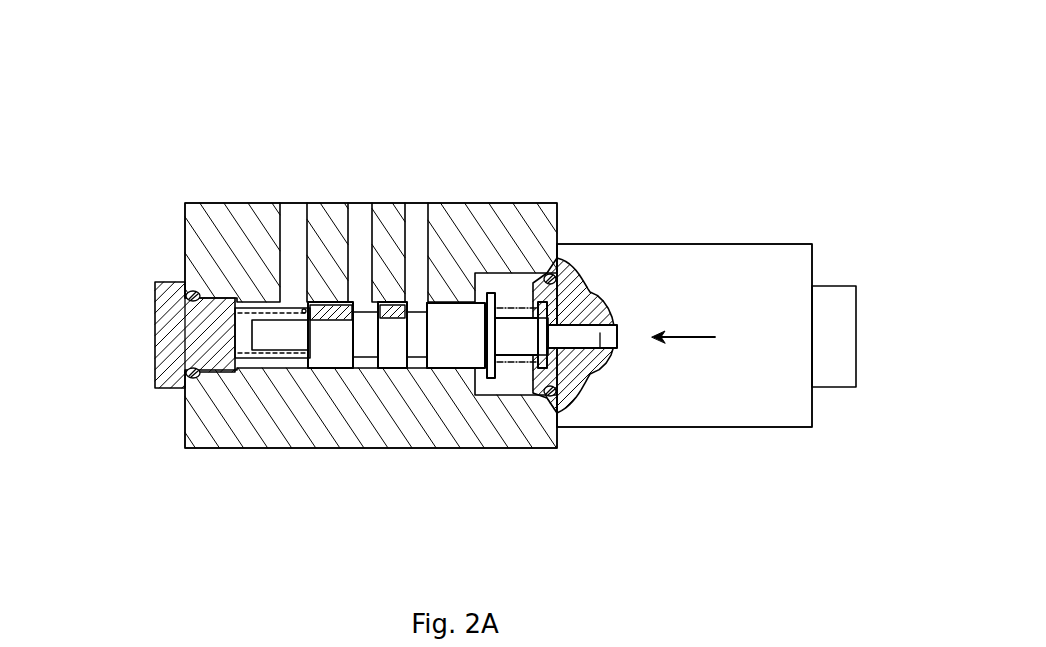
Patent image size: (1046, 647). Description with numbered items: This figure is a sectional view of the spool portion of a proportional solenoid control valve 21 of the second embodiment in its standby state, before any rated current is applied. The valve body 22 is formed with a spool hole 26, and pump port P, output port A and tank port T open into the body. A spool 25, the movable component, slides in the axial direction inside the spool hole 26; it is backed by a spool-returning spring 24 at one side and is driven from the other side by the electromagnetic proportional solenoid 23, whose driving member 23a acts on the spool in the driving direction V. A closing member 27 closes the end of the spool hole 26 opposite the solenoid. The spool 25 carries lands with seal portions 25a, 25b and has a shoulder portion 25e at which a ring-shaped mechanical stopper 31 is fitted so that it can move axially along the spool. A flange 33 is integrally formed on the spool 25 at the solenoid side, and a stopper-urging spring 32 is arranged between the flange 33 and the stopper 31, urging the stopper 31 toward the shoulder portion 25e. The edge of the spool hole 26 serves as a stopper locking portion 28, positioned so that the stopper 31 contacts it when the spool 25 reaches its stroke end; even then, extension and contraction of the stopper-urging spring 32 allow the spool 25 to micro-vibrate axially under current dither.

The proportional solenoid control valve 21 is at (652, 100).
The valve body 22 is at (533, 203).
The electromagnetic proportional solenoid 23 is at (698, 247).
The solenoid plunger portion 23a is at (600, 373).
The spool-returning spring 24 is at (275, 358).
The spool 25 is at (328, 368).
The seal portion 25a is at (392, 303).
The seal portion 25b is at (330, 305).
The shoulder portion 25e is at (455, 303).
The spool hole 26 is at (458, 357).
The plug 27 is at (165, 325).
The stopper locking portion 28 is at (542, 277).
The mechanical stopper 31 is at (494, 378).
The stopper-urging spring 32 is at (515, 367).
The flange 33 is at (560, 403).
The tank port T is at (299, 285).
The output port A is at (355, 297).
The pump port P is at (418, 212).
The driving direction V is at (687, 340).